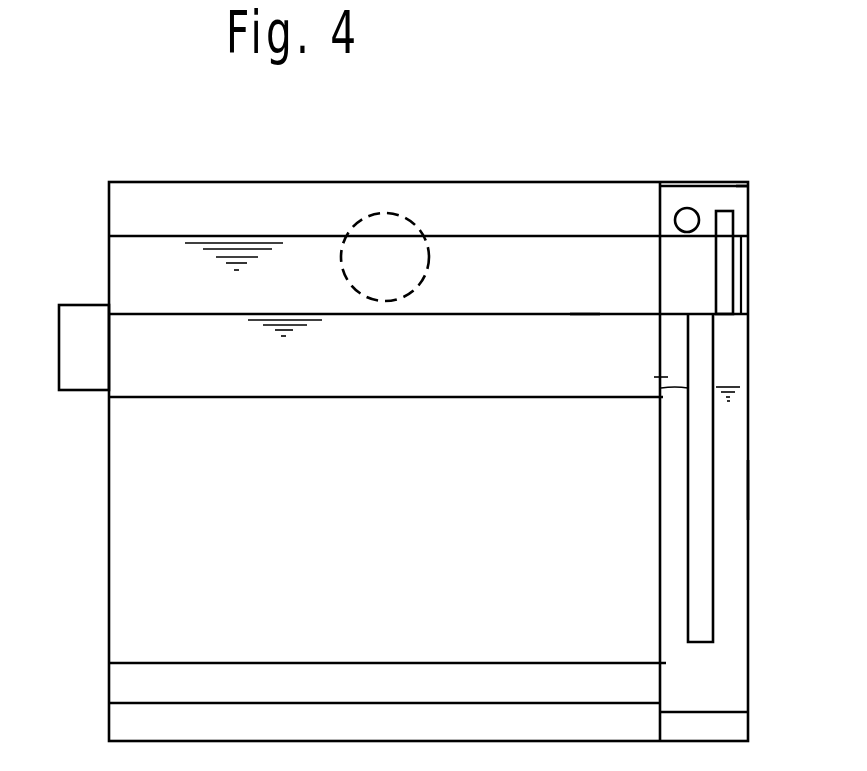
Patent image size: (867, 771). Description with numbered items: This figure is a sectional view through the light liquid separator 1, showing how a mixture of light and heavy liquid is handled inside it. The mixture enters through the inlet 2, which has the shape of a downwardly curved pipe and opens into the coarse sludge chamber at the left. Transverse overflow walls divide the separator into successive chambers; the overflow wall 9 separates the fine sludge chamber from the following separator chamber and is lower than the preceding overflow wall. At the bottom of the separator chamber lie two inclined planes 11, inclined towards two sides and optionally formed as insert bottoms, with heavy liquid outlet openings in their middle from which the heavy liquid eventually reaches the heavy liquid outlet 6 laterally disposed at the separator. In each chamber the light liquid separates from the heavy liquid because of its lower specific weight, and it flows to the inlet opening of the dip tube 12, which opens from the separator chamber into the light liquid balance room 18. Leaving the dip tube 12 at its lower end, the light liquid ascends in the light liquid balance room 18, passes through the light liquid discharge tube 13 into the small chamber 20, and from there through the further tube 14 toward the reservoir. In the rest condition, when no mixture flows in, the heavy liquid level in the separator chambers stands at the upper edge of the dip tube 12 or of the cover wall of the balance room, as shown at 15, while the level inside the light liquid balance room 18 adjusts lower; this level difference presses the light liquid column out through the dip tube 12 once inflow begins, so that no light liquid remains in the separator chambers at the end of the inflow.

The light liquid separator 1 is at (812, 427).
The inlet 2 is at (419, 228).
The heavy liquid outlet 6 is at (70, 340).
The overflow wall 9 is at (380, 363).
The inclined planes 11 is at (468, 620).
The dip tube 12 is at (706, 572).
The light liquid discharge tube 13 is at (731, 276).
The tube 14 is at (686, 208).
The heavy liquid level 15 is at (581, 313).
The light liquid balance room 18 is at (742, 506).
The small chamber 20 is at (743, 208).